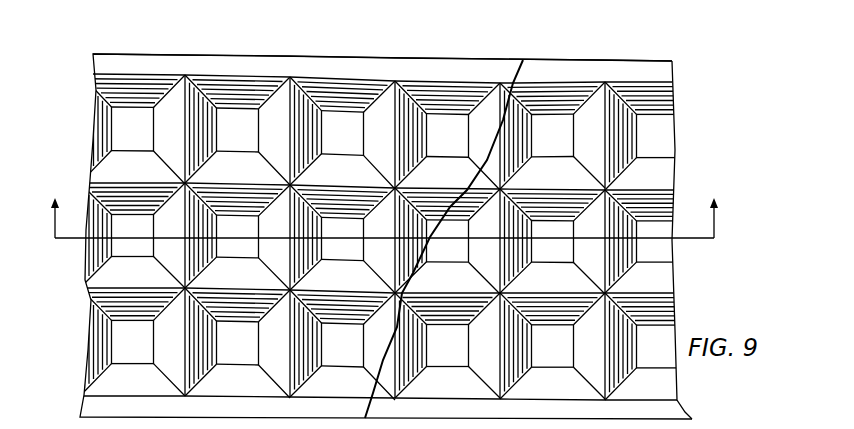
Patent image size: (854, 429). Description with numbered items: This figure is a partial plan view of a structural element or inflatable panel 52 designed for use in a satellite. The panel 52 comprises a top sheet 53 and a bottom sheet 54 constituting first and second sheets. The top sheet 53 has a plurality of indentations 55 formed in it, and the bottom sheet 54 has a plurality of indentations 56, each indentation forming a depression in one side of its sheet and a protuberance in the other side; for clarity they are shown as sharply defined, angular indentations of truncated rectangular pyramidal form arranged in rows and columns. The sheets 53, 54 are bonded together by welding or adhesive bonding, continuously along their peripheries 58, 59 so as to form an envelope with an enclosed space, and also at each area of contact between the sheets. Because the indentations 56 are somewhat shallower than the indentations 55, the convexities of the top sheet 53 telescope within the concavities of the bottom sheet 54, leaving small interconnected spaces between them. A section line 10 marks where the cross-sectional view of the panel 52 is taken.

The section line 10 is at (384, 206).
The inflatable panel 52 is at (254, 44).
The top sheet 53 is at (355, 79).
The bottom sheet 54 is at (626, 83).
The indentations 55 is at (251, 141).
The indentations 56 is at (567, 150).
The periphery 58 is at (313, 66).
The periphery 59 is at (657, 70).